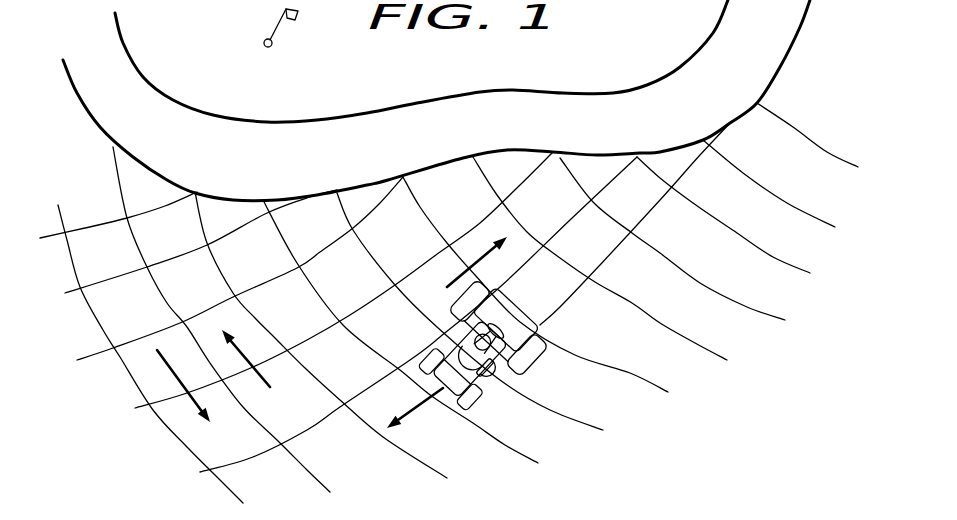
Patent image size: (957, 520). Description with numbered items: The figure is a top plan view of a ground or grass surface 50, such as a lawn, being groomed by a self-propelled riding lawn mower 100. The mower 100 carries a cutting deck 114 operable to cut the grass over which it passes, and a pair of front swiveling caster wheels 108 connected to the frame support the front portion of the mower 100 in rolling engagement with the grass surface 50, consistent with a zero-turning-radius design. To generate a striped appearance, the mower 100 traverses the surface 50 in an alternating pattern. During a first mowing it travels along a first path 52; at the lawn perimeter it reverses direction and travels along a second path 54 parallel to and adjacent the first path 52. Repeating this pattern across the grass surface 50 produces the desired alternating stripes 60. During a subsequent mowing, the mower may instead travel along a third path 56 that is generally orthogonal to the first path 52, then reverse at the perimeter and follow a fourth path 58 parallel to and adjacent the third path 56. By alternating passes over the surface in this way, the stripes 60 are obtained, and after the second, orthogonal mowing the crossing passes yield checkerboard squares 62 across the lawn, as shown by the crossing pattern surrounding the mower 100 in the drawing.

The grass surface 50 is at (388, 183).
The first path 52 is at (163, 367).
The second path 54 is at (245, 358).
The third path 56 is at (418, 407).
The fourth path 58 is at (460, 277).
The alternating stripes 60 is at (727, 325).
The checkerboard squares 62 is at (538, 160).
The riding lawn mower 100 is at (498, 359).
The front swiveling caster wheels 108 is at (422, 372).
The cutting deck 114 is at (493, 376).